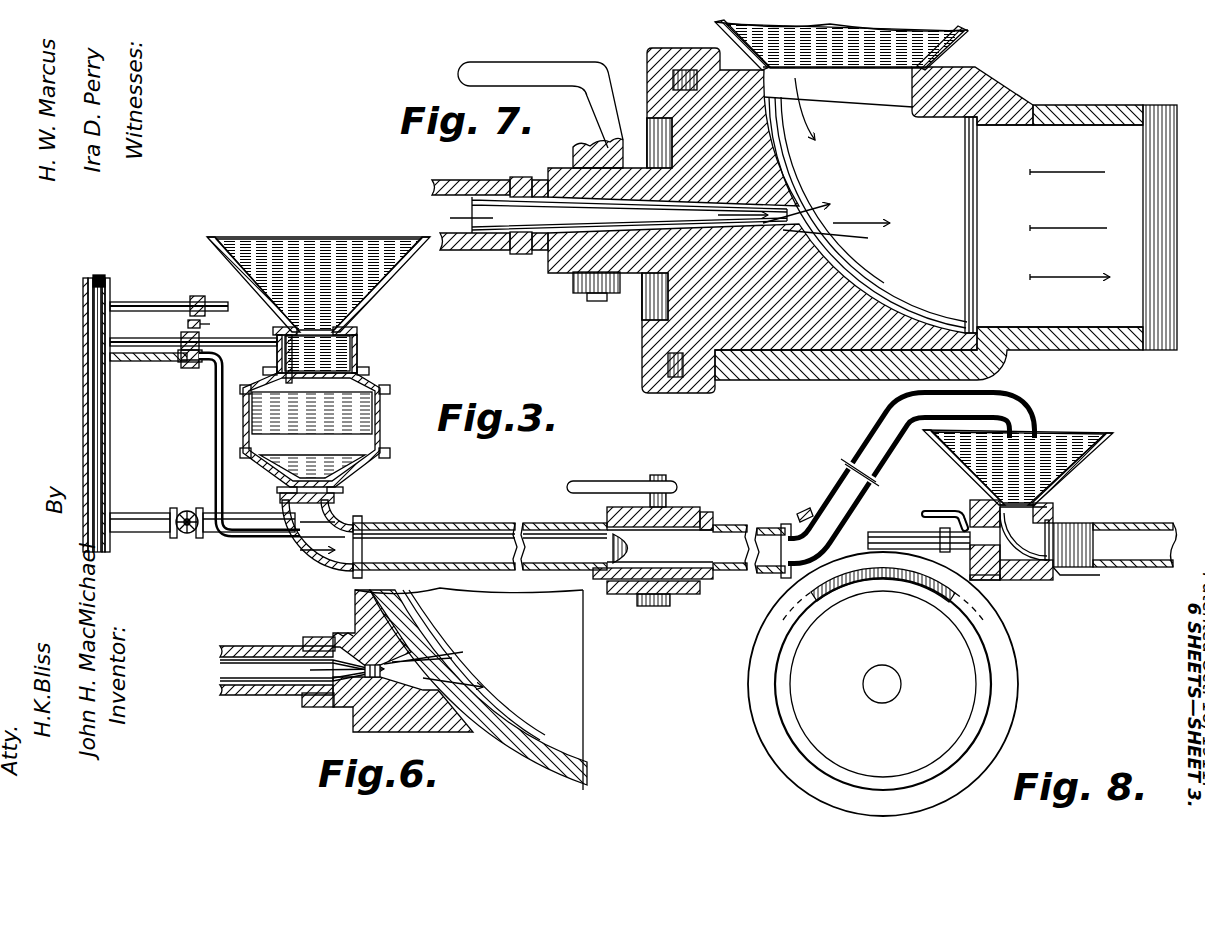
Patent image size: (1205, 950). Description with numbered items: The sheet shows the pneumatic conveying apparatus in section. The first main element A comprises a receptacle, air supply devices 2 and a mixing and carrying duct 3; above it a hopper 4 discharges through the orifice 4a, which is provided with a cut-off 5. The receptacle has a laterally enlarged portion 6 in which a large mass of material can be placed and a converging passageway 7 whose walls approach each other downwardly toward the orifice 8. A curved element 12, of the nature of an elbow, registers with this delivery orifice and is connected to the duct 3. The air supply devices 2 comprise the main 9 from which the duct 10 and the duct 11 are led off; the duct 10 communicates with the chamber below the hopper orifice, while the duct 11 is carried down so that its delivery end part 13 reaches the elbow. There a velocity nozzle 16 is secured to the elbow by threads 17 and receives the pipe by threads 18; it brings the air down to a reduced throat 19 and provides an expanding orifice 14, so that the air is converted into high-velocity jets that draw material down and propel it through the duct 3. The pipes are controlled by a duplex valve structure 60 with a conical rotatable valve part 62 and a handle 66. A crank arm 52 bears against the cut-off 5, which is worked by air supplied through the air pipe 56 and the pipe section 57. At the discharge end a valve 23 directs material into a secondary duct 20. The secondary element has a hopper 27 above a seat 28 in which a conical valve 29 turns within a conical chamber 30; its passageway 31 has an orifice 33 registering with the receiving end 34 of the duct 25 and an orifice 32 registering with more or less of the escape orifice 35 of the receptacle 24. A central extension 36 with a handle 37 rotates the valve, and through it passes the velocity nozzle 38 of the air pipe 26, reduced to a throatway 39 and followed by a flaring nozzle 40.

In FIG. 3, the air supply devices 2 is at (160, 400).
In FIG. 3, the mixing and carrying duct 3 is at (450, 523).
In FIG. 3, the hopper 4 is at (290, 248).
In FIG. 3, the orifice 4a is at (352, 328).
In FIG. 3, the cut-off 5 is at (316, 359).
In FIG. 3, the laterally enlarged portion 6 is at (315, 430).
In FIG. 3, the converging passageway 7 is at (352, 468).
In FIG. 3, the orifice 8 is at (278, 478).
In FIG. 3, the main 9 is at (83, 408).
In FIG. 3, the duct 10 is at (151, 340).
In FIG. 3, the duct 11 is at (167, 361).
In FIG. 3, the curved element 12 is at (288, 512).
In FIG. 6, the curved element 12 is at (383, 598).
In FIG. 3, the delivery end part 13 is at (247, 540).
In FIG. 6, the delivery end part 13 is at (225, 668).
In FIG. 6, the orifice 14 is at (455, 663).
In FIG. 6, the velocity nozzle 16 is at (317, 708).
In FIG. 6, the threads 17 is at (352, 626).
In FIG. 6, the threads 18 is at (305, 640).
In FIG. 6, the throat 19 is at (370, 686).
In FIG. 3, the secondary duct 20 is at (838, 500).
In FIG. 3, the valve 23 is at (702, 507).
In FIG. 7, the receptacle 24 is at (972, 85).
In FIG. 3, the receptacle 24 is at (1062, 503).
In FIG. 7, the duct 25 is at (1077, 227).
In FIG. 3, the duct 25 is at (1140, 530).
In FIG. 7, the air pipe 26 is at (465, 182).
In FIG. 3, the air pipe 26 is at (888, 531).
In FIG. 7, the hopper 27 is at (888, 64).
In FIG. 3, the hopper 27 is at (1085, 437).
In FIG. 7, the seat 28 is at (770, 365).
In FIG. 3, the seat 28 is at (1043, 580).
In FIG. 7, the conical valve 29 is at (687, 303).
In FIG. 3, the conical valve 29 is at (1002, 580).
In FIG. 8, the conical valve 29 is at (862, 684).
In FIG. 7, the conical chamber 30 is at (1003, 355).
In FIG. 3, the conical chamber 30 is at (1060, 573).
In FIG. 7, the passageway 31 is at (835, 203).
In FIG. 3, the passageway 31 is at (1023, 533).
In FIG. 7, the orifice 32 is at (868, 212).
In FIG. 8, the orifice 32 is at (903, 570).
In FIG. 7, the orifice 33 is at (954, 225).
In FIG. 3, the orifice 33 is at (1047, 540).
In FIG. 7, the receiving end 34 is at (1051, 233).
In FIG. 7, the escape orifice 35 is at (838, 103).
In FIG. 3, the escape orifice 35 is at (1020, 506).
In FIG. 7, the extension 36 is at (566, 258).
In FIG. 3, the extension 36 is at (962, 512).
In FIG. 7, the handle 37 is at (495, 66).
In FIG. 3, the handle 37 is at (925, 511).
In FIG. 7, the velocity nozzle 38 is at (513, 256).
In FIG. 7, the throatway 39 is at (763, 233).
In FIG. 7, the flaring nozzle 40 is at (836, 246).
In FIG. 3, the crank arm 52 is at (226, 372).
In FIG. 3, the air pipe 56 is at (167, 298).
In FIG. 3, the pipe section 57 is at (225, 307).
In FIG. 3, the duplex valve structure 60 is at (200, 362).
In FIG. 3, the conical rotatable valve part 62 is at (190, 370).
In FIG. 3, the handle 66 is at (211, 325).
In FIG. 3, the first main element A is at (407, 482).